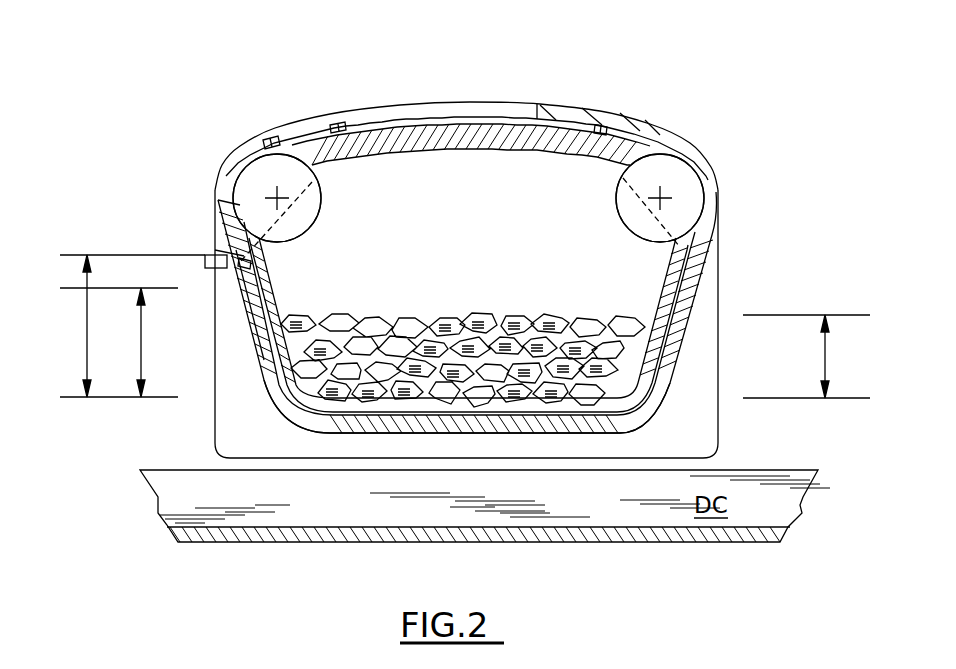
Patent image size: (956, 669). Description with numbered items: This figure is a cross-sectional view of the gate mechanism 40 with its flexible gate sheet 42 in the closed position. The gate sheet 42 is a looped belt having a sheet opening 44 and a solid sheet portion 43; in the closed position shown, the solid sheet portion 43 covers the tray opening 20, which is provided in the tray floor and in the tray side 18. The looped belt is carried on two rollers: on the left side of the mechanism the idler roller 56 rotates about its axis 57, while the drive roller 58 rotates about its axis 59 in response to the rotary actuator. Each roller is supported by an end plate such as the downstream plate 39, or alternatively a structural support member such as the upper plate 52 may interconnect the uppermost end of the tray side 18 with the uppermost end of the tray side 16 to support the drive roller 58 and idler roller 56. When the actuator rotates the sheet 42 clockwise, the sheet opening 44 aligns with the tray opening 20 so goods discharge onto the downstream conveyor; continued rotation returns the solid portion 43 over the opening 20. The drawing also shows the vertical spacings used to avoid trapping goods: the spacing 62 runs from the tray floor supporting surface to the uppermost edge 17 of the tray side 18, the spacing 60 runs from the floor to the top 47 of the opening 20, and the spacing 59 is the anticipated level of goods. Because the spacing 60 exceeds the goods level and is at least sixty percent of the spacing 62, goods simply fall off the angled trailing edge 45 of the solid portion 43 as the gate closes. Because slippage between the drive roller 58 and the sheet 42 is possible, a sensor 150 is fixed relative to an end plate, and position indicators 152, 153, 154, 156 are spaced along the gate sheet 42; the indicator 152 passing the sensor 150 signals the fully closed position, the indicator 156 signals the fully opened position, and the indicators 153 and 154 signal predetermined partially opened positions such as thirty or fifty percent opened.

The gate mechanism 40 is at (248, 103).
The sheet opening 44 is at (478, 108).
The position indicator 153 is at (263, 142).
The position indicator 154 is at (335, 123).
The position indicator 156 is at (596, 124).
The upper plate 52 is at (485, 152).
The idler roller 56 is at (312, 222).
The axis 57 is at (268, 192).
The drive roller 58 is at (618, 212).
The axis / vertical spacing 59 is at (660, 198).
The tray side 16 is at (672, 262).
The tray side 18 is at (285, 284).
The position indicator 152 is at (262, 263).
The sensor 150 is at (208, 262).
The uppermost edge of tray side 17 is at (240, 255).
The trailing edge 45 is at (223, 202).
The top of the opening 47 is at (262, 303).
The downstream plate 39 is at (706, 341).
The flexible gate sheet 42 is at (292, 420).
The solid sheet portion 43 is at (650, 428).
The tray opening 20 is at (468, 428).
The spacing 62 is at (132, 326).
The spacing 60 is at (119, 342).